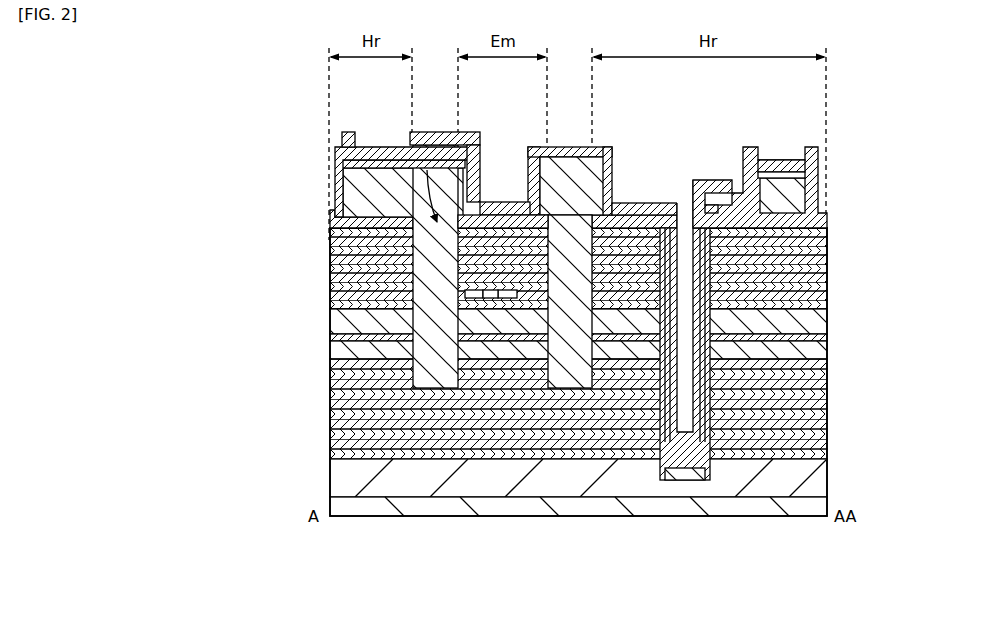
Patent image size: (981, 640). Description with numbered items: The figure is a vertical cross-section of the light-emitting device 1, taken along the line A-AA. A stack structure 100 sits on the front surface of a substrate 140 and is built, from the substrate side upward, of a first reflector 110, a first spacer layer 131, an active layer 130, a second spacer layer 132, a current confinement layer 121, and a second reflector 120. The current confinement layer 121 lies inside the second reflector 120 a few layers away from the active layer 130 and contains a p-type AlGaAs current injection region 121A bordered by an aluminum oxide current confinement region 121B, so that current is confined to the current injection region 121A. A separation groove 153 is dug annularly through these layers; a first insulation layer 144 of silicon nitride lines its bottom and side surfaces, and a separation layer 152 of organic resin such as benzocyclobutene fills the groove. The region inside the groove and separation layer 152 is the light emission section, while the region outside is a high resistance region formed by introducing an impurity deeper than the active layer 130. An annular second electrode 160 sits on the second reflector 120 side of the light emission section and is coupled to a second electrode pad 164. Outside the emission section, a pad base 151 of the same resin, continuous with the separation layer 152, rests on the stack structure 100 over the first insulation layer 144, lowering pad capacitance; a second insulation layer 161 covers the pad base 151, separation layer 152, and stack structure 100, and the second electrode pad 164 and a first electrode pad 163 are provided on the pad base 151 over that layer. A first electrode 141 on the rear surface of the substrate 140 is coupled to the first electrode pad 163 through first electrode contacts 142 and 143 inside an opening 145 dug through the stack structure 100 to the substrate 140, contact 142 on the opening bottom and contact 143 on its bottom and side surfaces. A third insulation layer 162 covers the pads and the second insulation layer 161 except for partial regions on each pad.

The light-emitting device 1 is at (892, 86).
The stack structure 100 is at (581, 420).
The first reflector 110 is at (832, 359).
The second reflector 120 is at (606, 420).
The current confinement layer 121 is at (501, 451).
The current injection region 121A is at (505, 296).
The current confinement region 121B is at (465, 296).
The active layer 130 is at (822, 338).
The first spacer layer 131 is at (822, 352).
The second spacer layer 132 is at (822, 320).
The substrate 140 is at (822, 486).
The first electrode 141 is at (765, 505).
The first electrode contact 142 is at (690, 480).
The first electrode contact 143 is at (708, 208).
The first insulation layer 144 is at (596, 300).
The opening 145 is at (684, 206).
The pad base 151 is at (360, 190).
The separation layer 152 is at (477, 131).
The separation groove 153 is at (435, 131).
The second electrode 160 is at (492, 208).
The second insulation layer 161 is at (340, 165).
The third insulation layer 162 is at (607, 160).
The first electrode pad 163 is at (800, 165).
The second electrode pad 164 is at (340, 150).